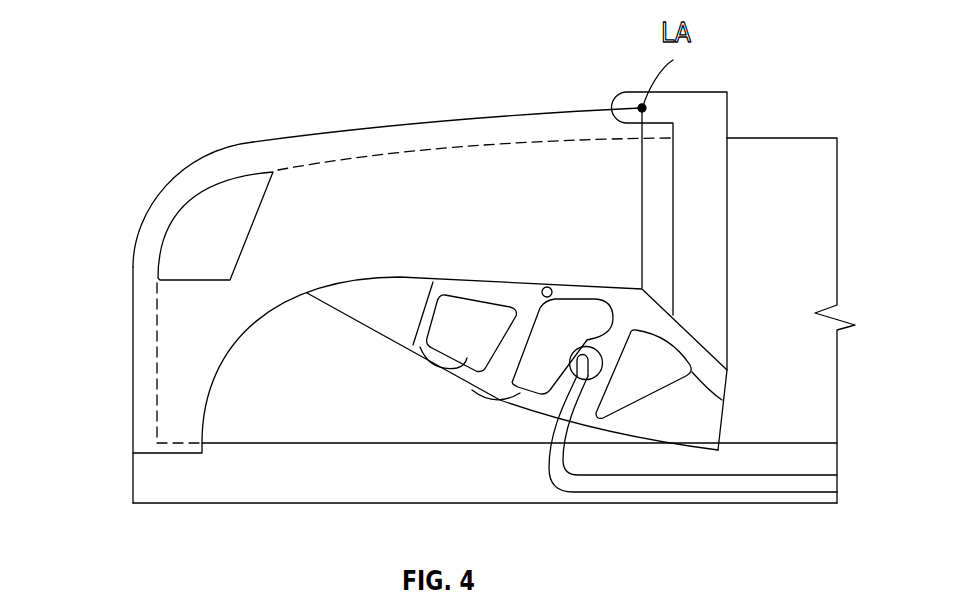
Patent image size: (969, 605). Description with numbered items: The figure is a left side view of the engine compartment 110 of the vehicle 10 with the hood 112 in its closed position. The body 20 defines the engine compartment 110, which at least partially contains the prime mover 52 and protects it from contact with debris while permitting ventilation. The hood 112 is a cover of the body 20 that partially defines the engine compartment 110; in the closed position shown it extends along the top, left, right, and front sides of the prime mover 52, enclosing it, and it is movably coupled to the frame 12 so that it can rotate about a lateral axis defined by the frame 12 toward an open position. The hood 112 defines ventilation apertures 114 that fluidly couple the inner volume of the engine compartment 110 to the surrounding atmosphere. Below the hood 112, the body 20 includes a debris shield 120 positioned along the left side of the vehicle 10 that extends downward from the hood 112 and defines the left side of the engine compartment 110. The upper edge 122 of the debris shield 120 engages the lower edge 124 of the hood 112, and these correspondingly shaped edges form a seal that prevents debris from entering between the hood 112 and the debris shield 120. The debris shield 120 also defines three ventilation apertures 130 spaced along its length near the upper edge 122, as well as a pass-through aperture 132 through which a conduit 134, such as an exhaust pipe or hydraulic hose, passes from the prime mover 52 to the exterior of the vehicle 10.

The vehicle 10 is at (841, 36).
The body 20 is at (135, 142).
The engine compartment 110 is at (105, 362).
The hood 112 is at (367, 127).
The ventilation apertures 114 is at (237, 181).
The prime mover 52 is at (497, 140).
The frame 12 is at (213, 497).
The debris shield 120 is at (687, 432).
The upper edge 122 is at (477, 280).
The lower edge 124 is at (547, 287).
The ventilation apertures 130 is at (500, 397).
The pass-through aperture 132 is at (570, 388).
The conduit 134 is at (610, 492).